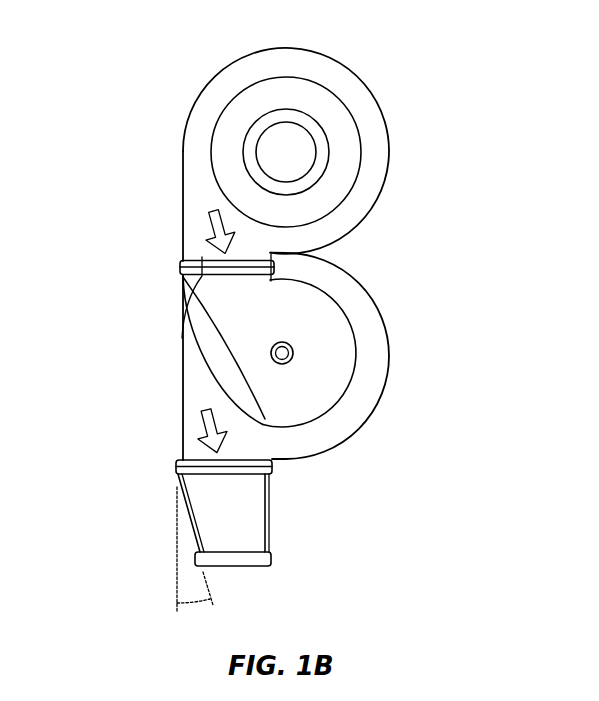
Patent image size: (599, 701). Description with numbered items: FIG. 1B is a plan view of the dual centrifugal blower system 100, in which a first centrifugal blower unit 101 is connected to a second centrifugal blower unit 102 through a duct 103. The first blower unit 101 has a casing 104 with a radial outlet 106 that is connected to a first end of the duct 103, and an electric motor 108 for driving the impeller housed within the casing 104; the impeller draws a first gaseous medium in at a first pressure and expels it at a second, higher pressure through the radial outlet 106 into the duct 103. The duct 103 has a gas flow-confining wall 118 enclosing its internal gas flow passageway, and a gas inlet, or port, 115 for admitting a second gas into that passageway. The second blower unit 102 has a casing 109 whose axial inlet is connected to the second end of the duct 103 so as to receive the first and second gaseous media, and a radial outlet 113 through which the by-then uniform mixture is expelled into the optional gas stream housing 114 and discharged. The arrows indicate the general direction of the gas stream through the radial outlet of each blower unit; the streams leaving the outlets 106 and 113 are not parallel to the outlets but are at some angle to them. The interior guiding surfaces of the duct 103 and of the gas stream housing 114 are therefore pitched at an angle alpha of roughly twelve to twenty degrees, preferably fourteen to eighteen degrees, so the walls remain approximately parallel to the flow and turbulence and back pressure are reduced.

The dual centrifugal blower system 100 is at (129, 106).
The first centrifugal blower unit 101 is at (183, 180).
The second centrifugal blower unit 102 is at (183, 371).
The duct 103 is at (283, 333).
The casing 104 is at (182, 237).
The radial outlet 106 is at (188, 306).
The electric motor 108 is at (293, 145).
The casing 109 is at (182, 428).
The radial outlet 113 is at (238, 450).
The gas stream housing 114 is at (240, 527).
The gas inlet 115 is at (290, 357).
The gas flow-confining wall 118 is at (307, 347).